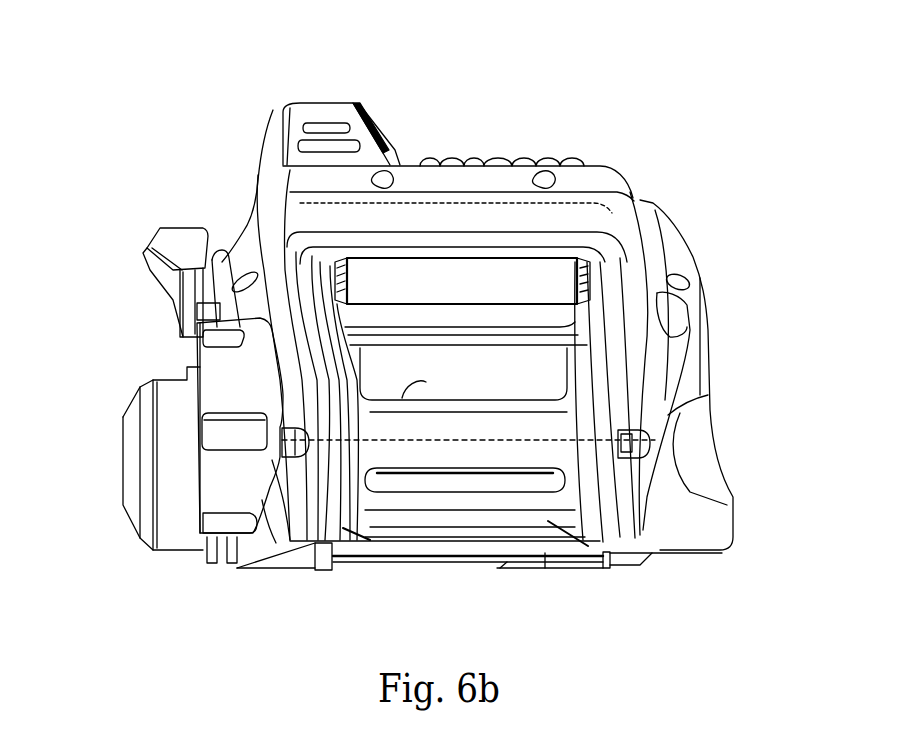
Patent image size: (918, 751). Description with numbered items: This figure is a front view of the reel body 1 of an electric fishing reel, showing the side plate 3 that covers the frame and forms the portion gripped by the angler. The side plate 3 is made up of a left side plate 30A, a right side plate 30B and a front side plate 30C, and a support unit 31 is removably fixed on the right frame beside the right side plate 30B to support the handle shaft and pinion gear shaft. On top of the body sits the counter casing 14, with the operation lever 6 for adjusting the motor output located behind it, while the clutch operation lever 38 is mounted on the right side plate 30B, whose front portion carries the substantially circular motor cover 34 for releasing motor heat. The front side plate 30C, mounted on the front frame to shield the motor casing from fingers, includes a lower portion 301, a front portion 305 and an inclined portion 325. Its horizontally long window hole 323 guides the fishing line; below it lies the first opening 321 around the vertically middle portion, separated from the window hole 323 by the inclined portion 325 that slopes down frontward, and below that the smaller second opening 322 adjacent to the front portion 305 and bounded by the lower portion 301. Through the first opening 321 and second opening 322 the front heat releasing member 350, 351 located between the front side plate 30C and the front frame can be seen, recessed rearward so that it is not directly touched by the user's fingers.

The reel body 1 is at (632, 108).
The side plate 3 is at (486, 340).
The operation lever 6 is at (323, 110).
The counter casing 14 is at (430, 275).
The left side plate 30A is at (687, 229).
The right side plate 30B is at (237, 241).
The front side plate 30C is at (600, 228).
The support unit 31 is at (175, 528).
The motor cover 34 is at (222, 487).
The operation lever 38 is at (183, 223).
The lower portion 301 is at (471, 530).
The front portion 305 is at (540, 425).
The first opening 321 is at (422, 378).
The second opening 322 is at (437, 490).
The window hole 323 is at (420, 315).
The inclined portion 325 is at (478, 315).
The front heat releasing member 350 is at (505, 350).
The opening of slit 351 is at (508, 365).